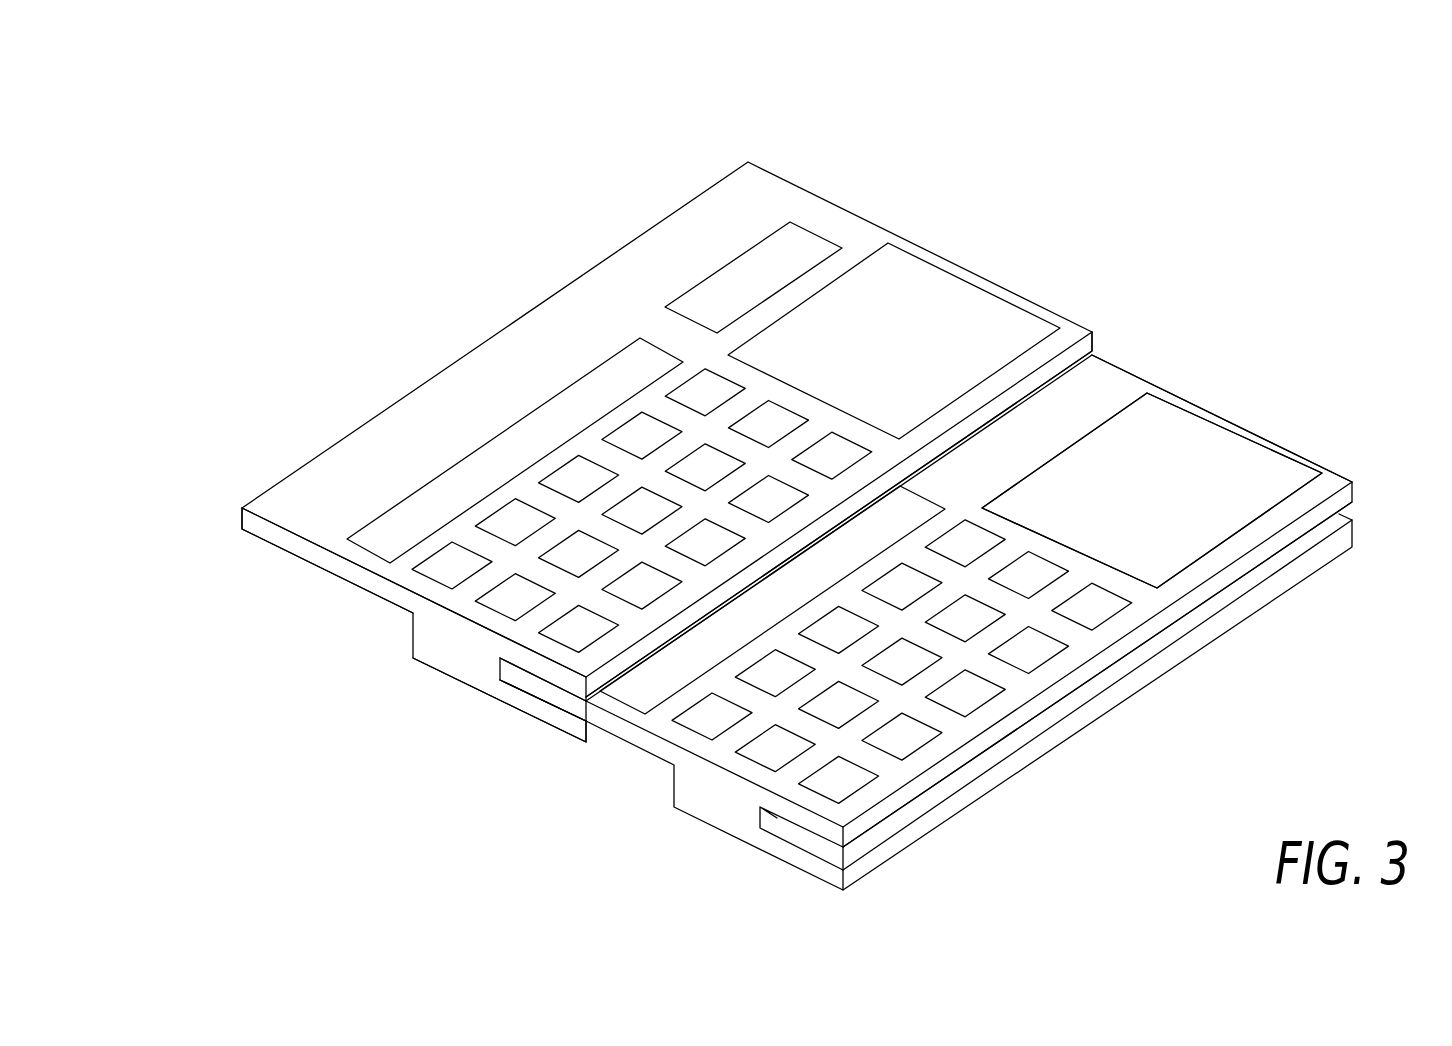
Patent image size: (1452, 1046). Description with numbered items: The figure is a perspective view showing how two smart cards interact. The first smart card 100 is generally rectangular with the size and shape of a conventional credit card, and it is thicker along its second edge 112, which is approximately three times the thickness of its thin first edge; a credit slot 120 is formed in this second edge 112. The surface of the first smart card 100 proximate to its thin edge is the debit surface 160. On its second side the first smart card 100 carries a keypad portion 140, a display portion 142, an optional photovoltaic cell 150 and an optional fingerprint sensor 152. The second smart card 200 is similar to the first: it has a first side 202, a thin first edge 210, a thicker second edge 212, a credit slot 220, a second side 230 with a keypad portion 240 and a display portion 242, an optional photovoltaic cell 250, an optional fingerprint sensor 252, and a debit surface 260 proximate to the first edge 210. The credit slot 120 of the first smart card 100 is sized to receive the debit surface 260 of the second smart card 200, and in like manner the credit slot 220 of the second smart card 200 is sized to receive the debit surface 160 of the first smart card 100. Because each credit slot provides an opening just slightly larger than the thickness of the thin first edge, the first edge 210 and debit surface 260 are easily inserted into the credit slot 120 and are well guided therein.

The smart card 100 is at (625, 243).
The second edge 112 is at (1065, 407).
The credit slot 120 is at (512, 687).
The keypad portion 140 is at (452, 565).
The display portion 142 is at (383, 538).
The photovoltaic cell 150 is at (801, 250).
The fingerprint sensor 152 is at (903, 287).
The debit surface 160 is at (282, 553).
The second smart card 200 is at (1222, 414).
The first side 202 is at (702, 826).
The first edge 210 is at (497, 668).
The second edge 212 is at (1313, 559).
The credit slot 220 is at (1003, 746).
The second side 230 is at (1130, 367).
The keypad portion 240 is at (720, 728).
The display portion 242 is at (643, 688).
The photovoltaic cell 250 is at (1128, 393).
The fingerprint sensor 252 is at (1275, 482).
The debit surface 260 is at (540, 700).